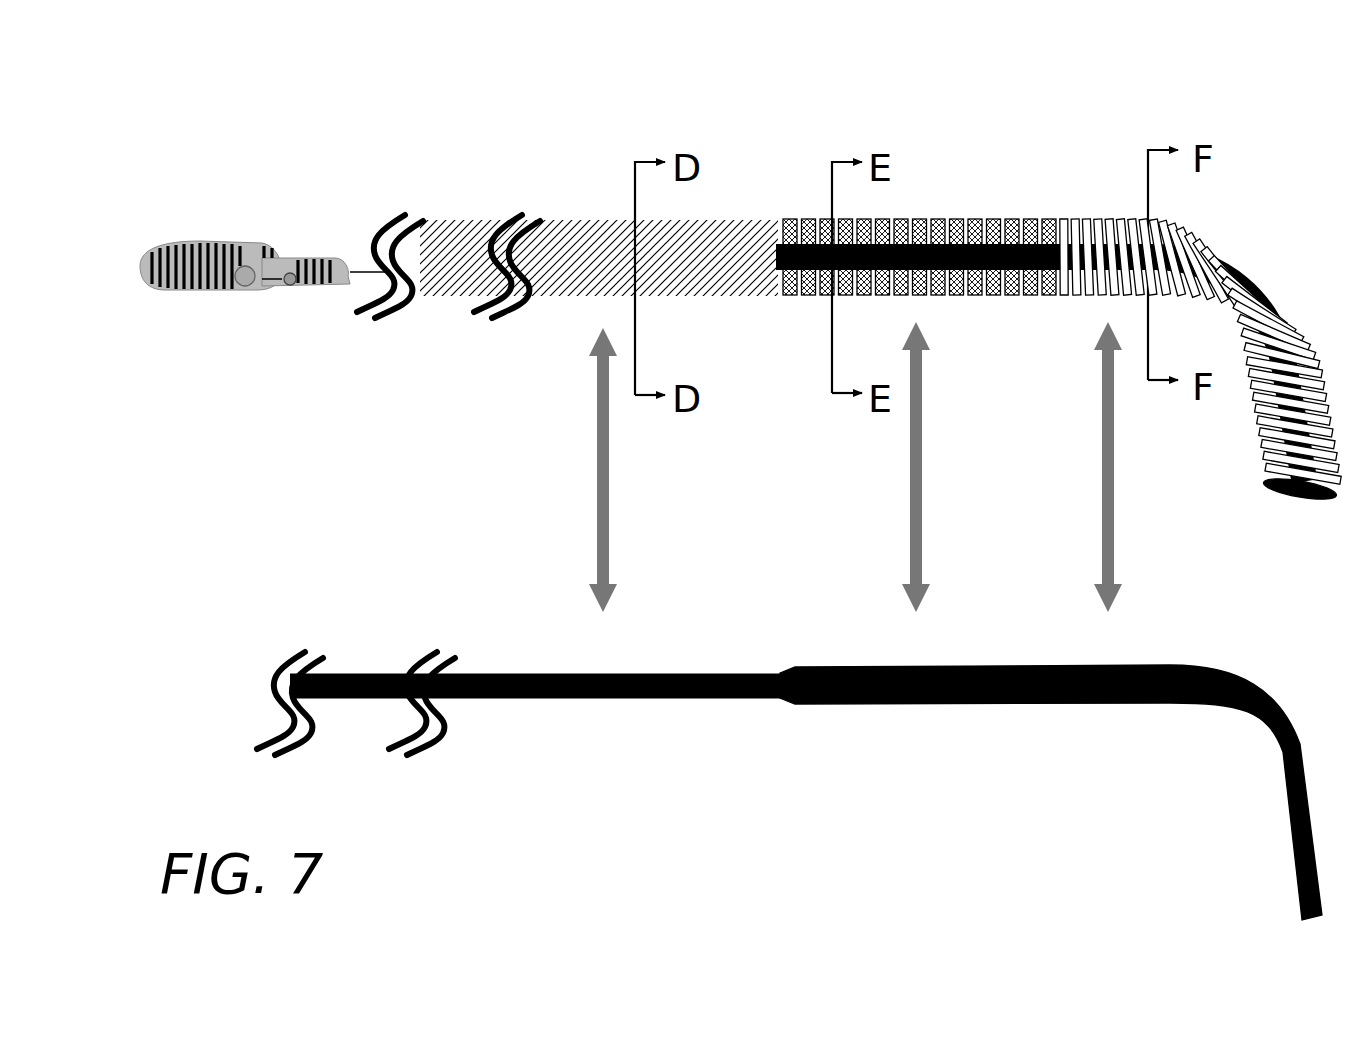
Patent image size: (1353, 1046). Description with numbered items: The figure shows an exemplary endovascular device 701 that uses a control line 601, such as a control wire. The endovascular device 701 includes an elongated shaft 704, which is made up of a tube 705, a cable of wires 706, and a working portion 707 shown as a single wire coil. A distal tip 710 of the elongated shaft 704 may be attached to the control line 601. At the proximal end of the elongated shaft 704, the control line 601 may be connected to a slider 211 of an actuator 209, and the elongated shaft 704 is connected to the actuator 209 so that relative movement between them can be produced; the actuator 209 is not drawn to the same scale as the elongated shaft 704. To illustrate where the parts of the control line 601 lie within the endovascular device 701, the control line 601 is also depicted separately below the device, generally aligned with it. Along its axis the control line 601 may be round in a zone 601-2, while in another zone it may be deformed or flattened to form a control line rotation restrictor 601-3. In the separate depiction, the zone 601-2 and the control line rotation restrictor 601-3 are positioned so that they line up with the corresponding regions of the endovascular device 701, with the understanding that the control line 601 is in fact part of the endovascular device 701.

The actuator 209 is at (190, 240).
The slider 211 is at (286, 285).
The endovascular device 701 is at (576, 178).
The elongated shaft 704 is at (1058, 309).
The tube 705 is at (704, 222).
The cable of wires 706 is at (1008, 220).
The working portion 707 is at (1295, 292).
The distal tip 710 is at (1296, 500).
The control line 601 is at (789, 720).
The zone 601-2 is at (464, 668).
The control line rotation restrictor 601-3 is at (975, 662).